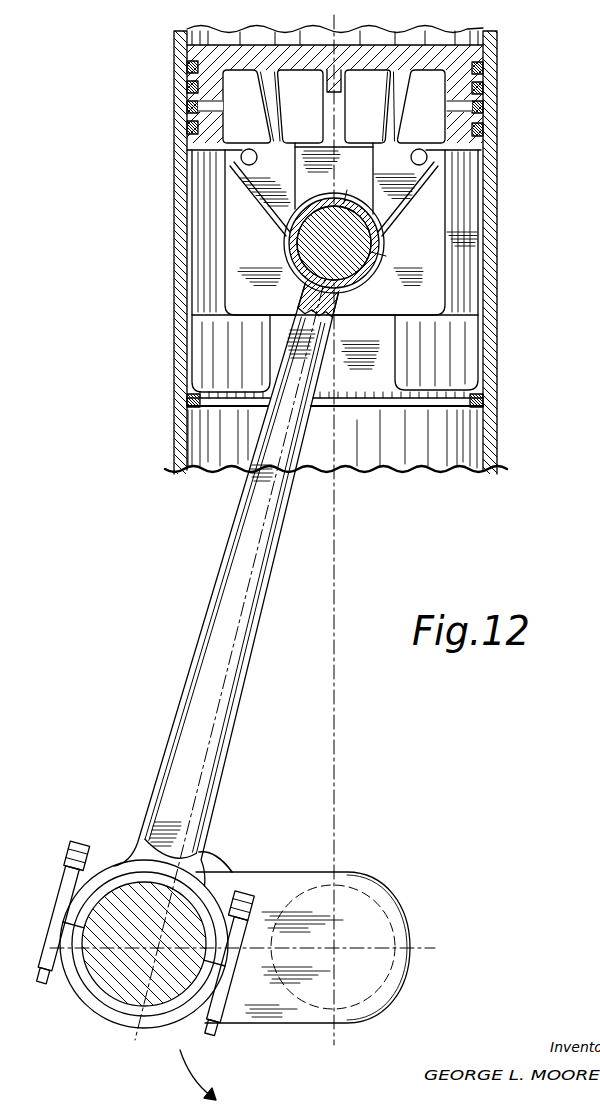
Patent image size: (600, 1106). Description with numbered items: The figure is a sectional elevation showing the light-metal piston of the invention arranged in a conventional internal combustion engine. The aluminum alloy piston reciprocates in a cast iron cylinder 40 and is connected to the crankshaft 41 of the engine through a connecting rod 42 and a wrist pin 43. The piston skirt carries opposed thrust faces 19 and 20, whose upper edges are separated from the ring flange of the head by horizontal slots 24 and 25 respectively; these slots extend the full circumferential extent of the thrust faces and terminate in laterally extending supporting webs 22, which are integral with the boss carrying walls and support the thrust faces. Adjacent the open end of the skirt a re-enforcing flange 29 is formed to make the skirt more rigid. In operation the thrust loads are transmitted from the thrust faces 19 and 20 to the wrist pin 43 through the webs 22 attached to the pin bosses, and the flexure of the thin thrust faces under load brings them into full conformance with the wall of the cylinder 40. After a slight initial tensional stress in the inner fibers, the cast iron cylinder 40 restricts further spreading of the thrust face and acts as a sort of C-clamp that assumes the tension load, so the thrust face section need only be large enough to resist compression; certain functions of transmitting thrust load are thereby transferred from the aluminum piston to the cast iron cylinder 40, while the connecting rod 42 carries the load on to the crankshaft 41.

The thrust face 19 is at (186, 271).
The thrust face 20 is at (484, 268).
The supporting web 22 is at (256, 306).
The horizontal slot 24 is at (241, 154).
The horizontal slot 25 is at (427, 154).
The re-enforcing flange 29 is at (488, 405).
The cast iron cylinder 40 is at (491, 186).
The crankshaft 41 is at (282, 888).
The connecting rod 42 is at (224, 674).
The wrist pin 43 is at (364, 239).